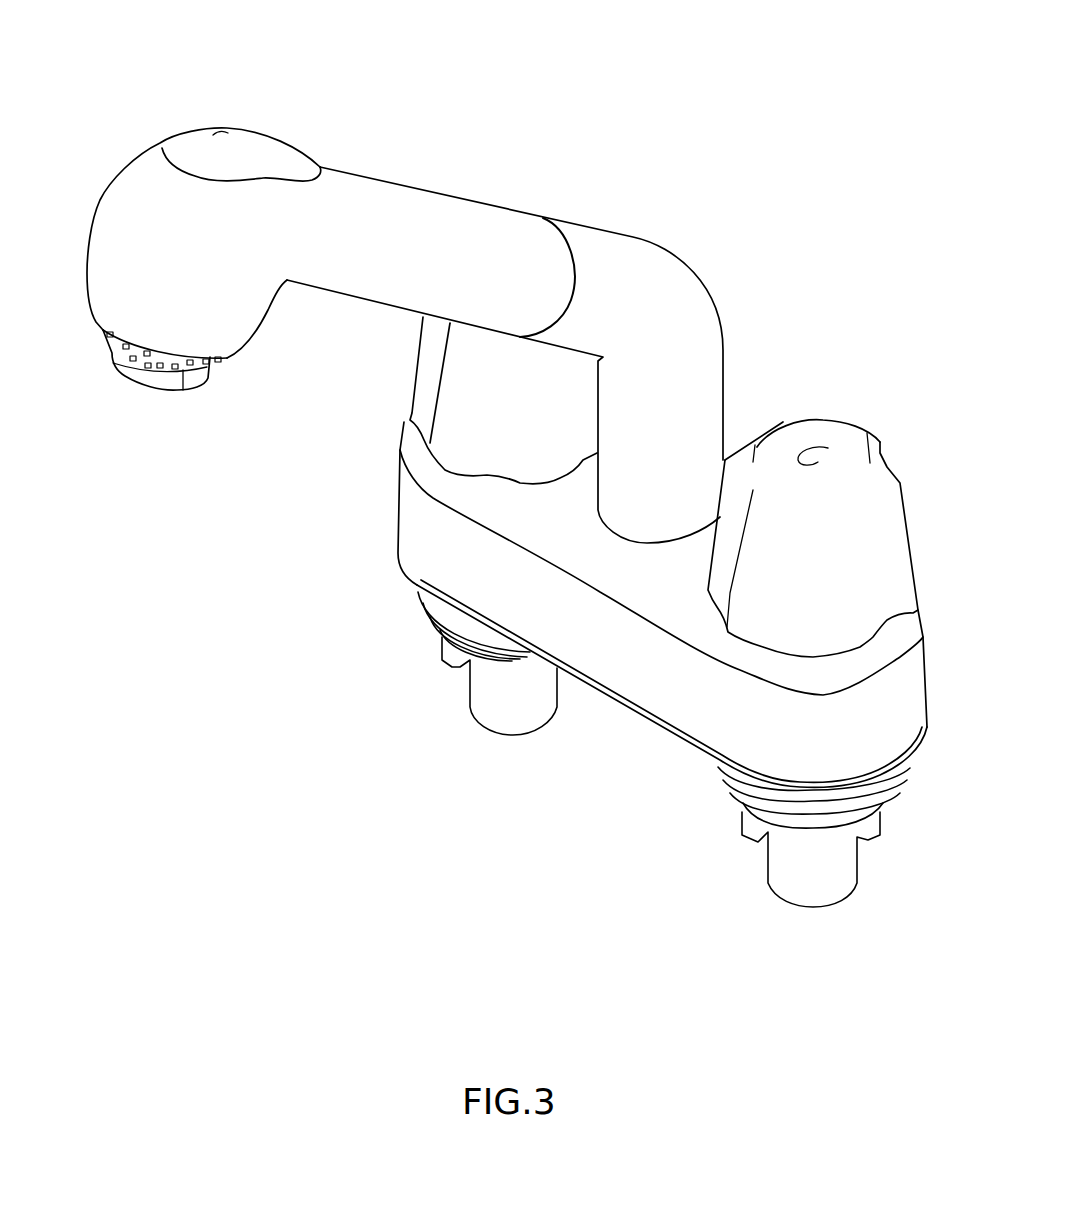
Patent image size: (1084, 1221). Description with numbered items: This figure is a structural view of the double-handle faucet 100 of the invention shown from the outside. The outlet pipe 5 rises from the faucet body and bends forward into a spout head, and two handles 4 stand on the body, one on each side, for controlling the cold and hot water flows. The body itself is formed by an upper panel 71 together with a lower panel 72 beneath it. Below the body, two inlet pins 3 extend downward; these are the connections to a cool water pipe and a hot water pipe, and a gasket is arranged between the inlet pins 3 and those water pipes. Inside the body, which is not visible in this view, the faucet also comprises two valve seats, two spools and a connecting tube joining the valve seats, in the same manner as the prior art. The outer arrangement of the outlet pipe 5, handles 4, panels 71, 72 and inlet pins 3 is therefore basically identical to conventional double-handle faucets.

The double-handle faucet 100 is at (710, 97).
The outlet pipe 5 is at (410, 200).
The handle 4 is at (457, 408).
The inlet pin 3 is at (480, 710).
The upper panel 71 is at (620, 667).
The lower panel 72 is at (680, 737).